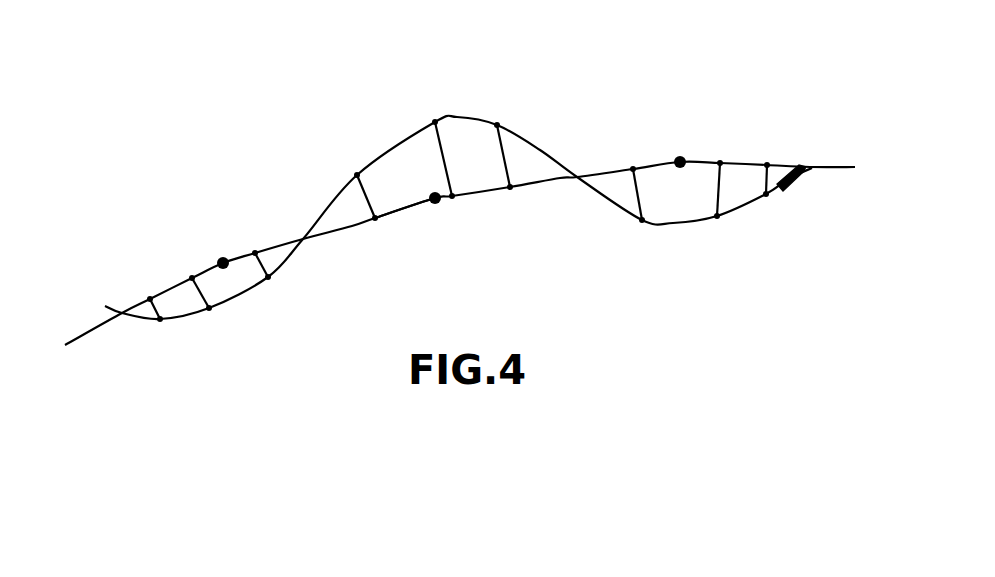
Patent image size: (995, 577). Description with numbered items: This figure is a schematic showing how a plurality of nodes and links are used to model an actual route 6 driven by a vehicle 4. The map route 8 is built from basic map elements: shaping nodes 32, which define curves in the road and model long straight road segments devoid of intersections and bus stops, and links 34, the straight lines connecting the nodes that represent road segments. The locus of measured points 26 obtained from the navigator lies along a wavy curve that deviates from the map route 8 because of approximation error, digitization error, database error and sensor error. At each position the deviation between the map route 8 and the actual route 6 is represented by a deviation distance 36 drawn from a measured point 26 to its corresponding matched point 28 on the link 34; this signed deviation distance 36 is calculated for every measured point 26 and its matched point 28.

The vehicle 4 is at (788, 187).
The actual route 6 is at (497, 125).
The map route 8 is at (407, 212).
The measured point 26 is at (207, 312).
The matched point 28 is at (193, 277).
The shaping node 32 is at (221, 257).
The link 34 is at (175, 283).
The deviation distance 36 is at (197, 293).